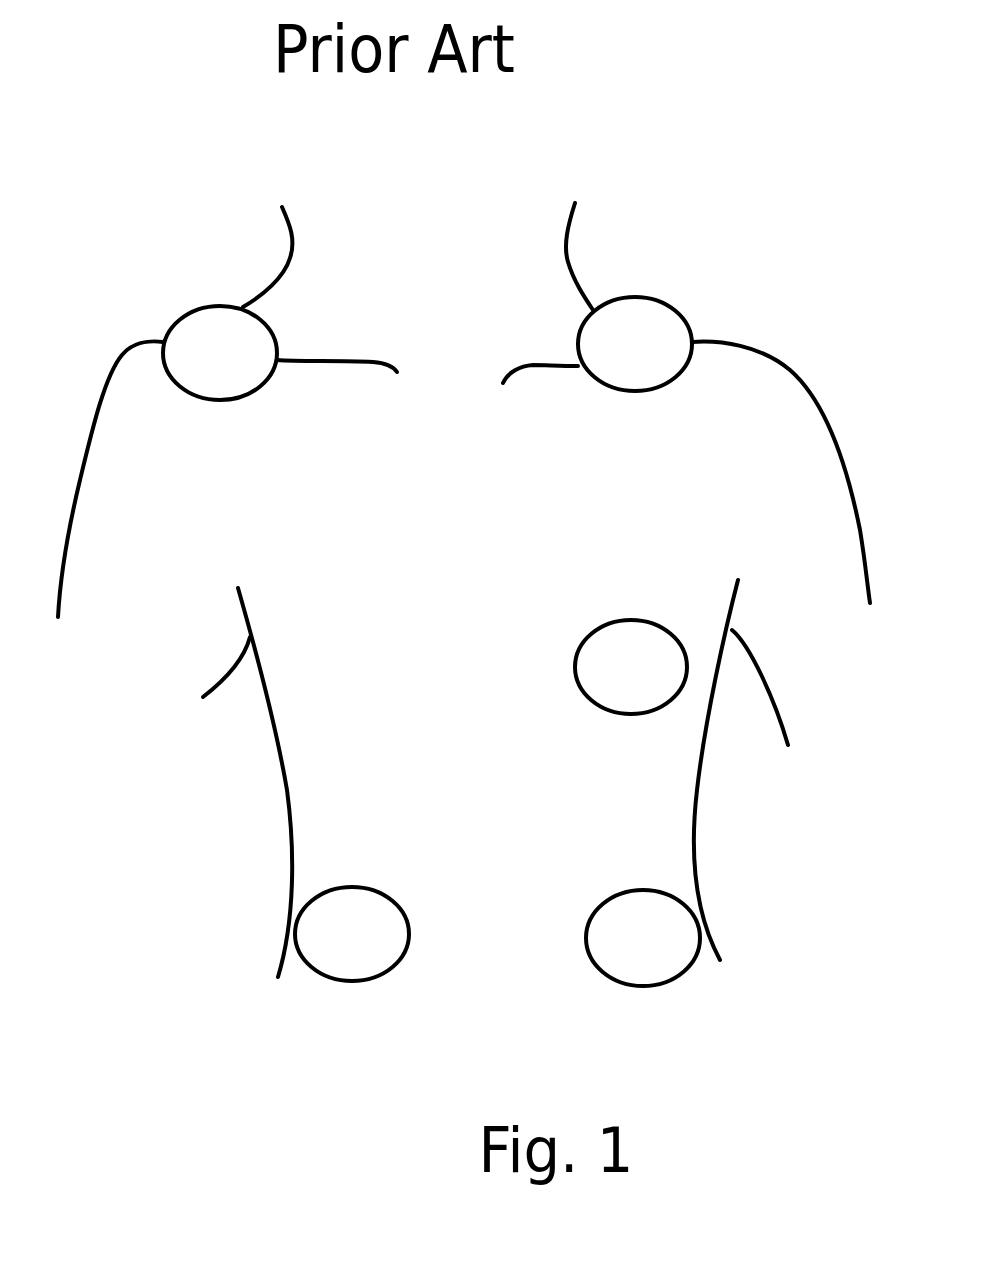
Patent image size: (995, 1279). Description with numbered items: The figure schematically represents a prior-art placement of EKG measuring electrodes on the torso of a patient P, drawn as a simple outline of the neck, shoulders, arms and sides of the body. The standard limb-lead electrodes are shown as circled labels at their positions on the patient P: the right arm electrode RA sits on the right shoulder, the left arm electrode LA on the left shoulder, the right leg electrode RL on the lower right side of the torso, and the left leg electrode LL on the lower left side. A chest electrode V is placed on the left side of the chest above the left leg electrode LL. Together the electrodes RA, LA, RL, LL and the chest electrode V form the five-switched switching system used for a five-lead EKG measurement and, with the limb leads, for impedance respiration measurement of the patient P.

The right arm electrode RA is at (220, 353).
The left arm electrode LA is at (635, 344).
The chest electrode V is at (631, 667).
The right leg electrode RL is at (352, 934).
The left leg electrode LL is at (643, 938).
The patient P is at (697, 837).